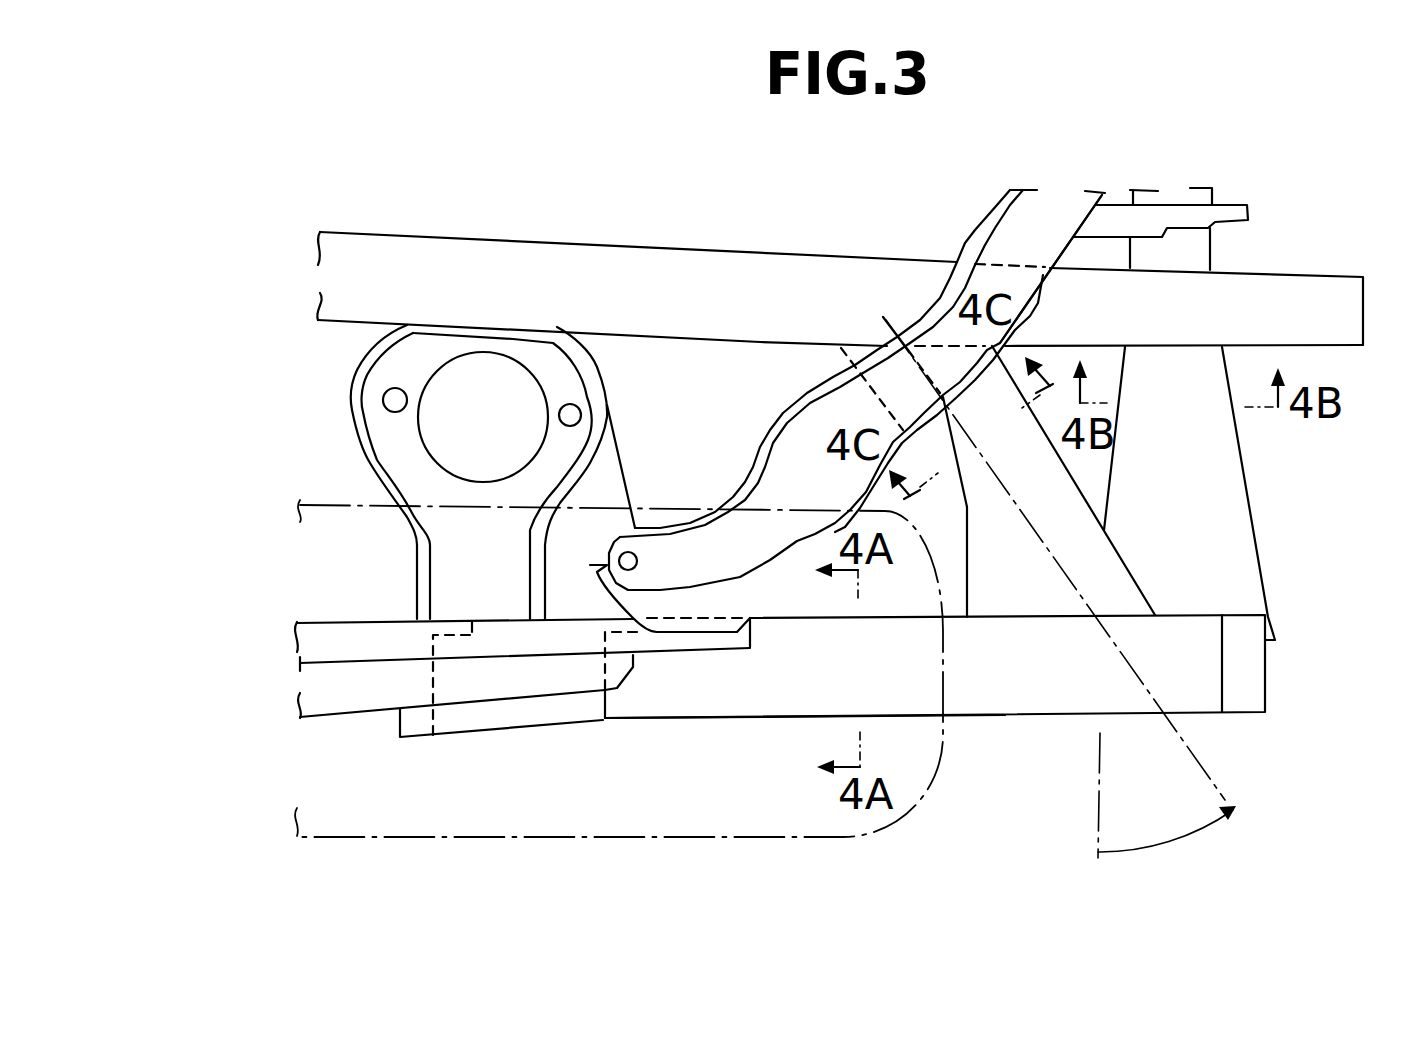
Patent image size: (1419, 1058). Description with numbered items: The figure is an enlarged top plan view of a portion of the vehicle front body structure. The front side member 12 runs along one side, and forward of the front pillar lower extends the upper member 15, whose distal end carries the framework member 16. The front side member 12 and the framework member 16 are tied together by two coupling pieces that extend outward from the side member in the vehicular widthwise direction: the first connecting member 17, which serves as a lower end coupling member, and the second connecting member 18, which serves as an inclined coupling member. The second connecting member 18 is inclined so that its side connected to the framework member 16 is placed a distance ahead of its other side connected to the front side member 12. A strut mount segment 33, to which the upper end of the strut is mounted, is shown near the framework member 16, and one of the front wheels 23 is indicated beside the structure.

The front side member 12 is at (672, 249).
The upper member 15 is at (343, 717).
The framework member 16 is at (1005, 720).
The first connecting member 17 is at (1259, 567).
The second connecting member 18 is at (1064, 467).
The front wheel 23 is at (547, 836).
The strut mount segment 33 is at (340, 411).